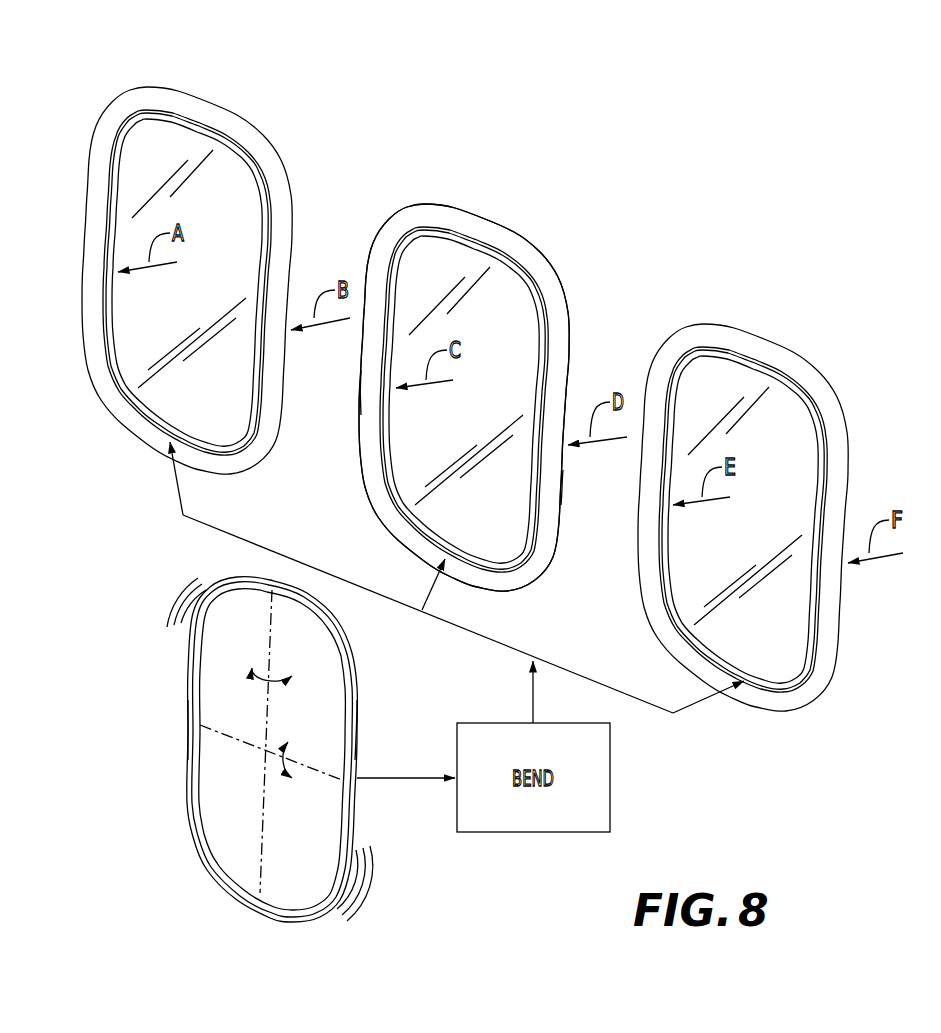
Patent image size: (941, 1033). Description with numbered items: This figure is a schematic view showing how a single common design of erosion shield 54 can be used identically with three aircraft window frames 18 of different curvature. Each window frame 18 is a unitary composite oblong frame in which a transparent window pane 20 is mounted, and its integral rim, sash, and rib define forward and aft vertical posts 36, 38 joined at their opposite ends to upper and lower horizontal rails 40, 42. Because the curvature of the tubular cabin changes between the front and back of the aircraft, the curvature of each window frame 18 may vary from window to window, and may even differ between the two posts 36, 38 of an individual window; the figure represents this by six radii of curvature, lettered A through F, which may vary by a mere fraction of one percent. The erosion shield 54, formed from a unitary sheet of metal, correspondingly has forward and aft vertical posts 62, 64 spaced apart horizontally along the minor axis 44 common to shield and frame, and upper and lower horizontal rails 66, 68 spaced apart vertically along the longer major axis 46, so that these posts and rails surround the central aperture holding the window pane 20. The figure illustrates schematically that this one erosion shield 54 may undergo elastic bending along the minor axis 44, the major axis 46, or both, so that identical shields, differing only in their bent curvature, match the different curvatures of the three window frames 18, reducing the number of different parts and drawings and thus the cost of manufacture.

The window frame 18 is at (294, 185).
The window pane 20 is at (196, 403).
The forward vertical post 36 is at (360, 393).
The aft vertical post 38 is at (562, 489).
The upper horizontal rail 40 is at (487, 222).
The lower horizontal rail 42 is at (425, 568).
The minor axis 44 is at (320, 773).
The major axis 46 is at (262, 801).
The erosion shield 54 is at (258, 244).
The forward vertical post 62 is at (190, 747).
The aft vertical post 64 is at (352, 743).
The upper horizontal rail 66 is at (272, 592).
The lower horizontal rail 68 is at (253, 903).